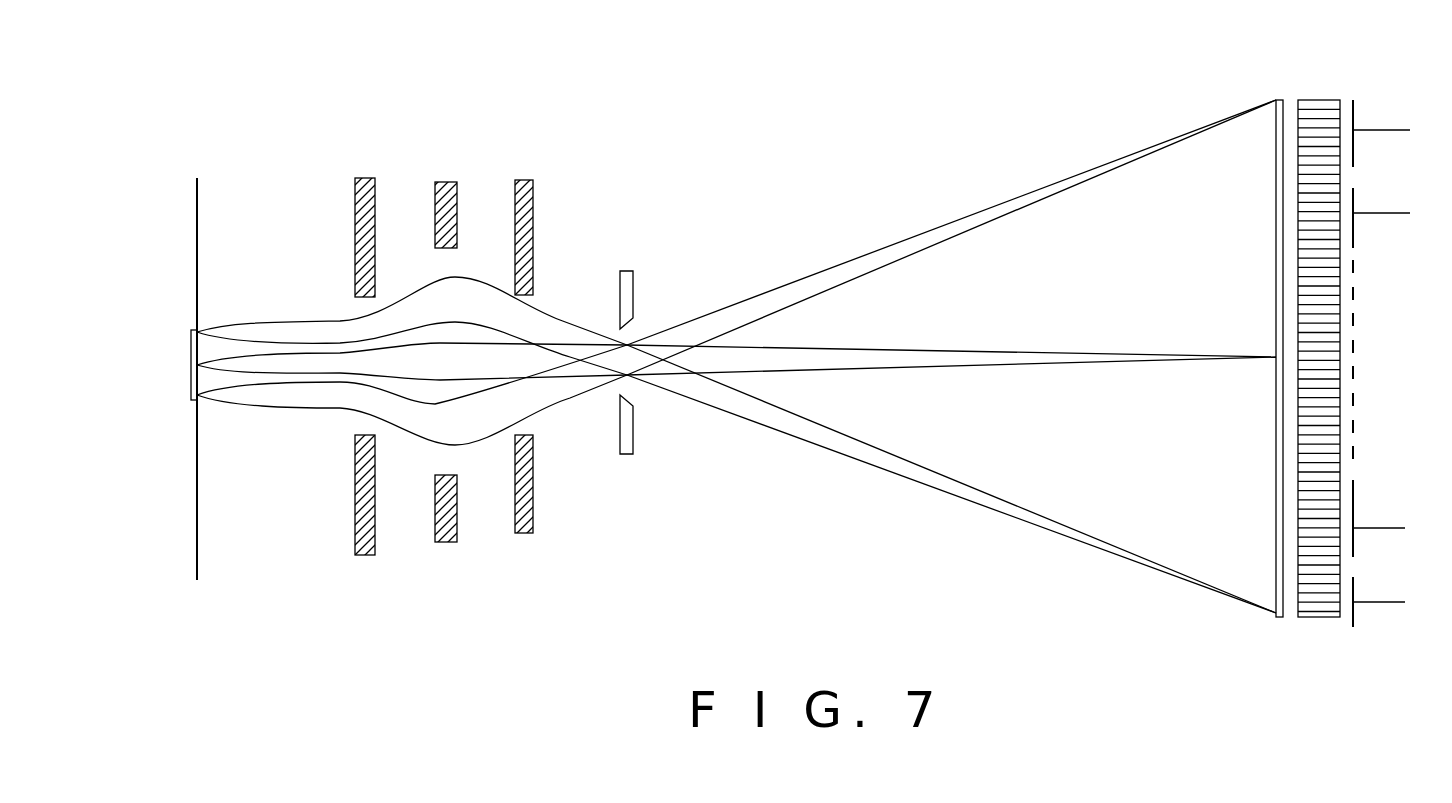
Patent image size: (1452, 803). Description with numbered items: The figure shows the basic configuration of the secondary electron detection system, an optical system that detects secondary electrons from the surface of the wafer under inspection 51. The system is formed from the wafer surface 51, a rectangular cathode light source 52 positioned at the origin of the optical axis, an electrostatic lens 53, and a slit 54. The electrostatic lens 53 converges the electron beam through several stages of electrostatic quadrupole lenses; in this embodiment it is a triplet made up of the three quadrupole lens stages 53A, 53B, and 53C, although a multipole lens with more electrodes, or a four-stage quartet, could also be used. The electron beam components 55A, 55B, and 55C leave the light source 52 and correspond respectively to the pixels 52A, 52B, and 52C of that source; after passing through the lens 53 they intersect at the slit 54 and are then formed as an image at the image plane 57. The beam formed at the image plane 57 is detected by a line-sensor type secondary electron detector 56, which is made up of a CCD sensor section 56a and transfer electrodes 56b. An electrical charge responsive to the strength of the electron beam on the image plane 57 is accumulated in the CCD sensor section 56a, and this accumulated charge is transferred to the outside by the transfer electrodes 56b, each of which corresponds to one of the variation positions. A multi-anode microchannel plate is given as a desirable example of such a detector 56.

The surface of the wafer under inspection 51 is at (199, 402).
The rectangular cathode light source 52 is at (201, 352).
The pixel 52A is at (192, 333).
The pixel 52B is at (192, 367).
The pixel 52C is at (192, 398).
The electrostatic lens 53 is at (442, 426).
The quadrupole lens 53A is at (363, 555).
The quadrupole lens 53B is at (447, 541).
The quadrupole lens 53C is at (525, 399).
The slit 54 is at (622, 455).
The electron beam component 55A is at (951, 479).
The electron beam component 55B is at (951, 344).
The electron beam component 55C is at (951, 237).
The line-sensor type secondary electron detector 56 is at (1368, 356).
The CCD sensor section 56a is at (1318, 618).
The transfer electrodes 56b is at (1385, 604).
The image plane 57 is at (1280, 618).